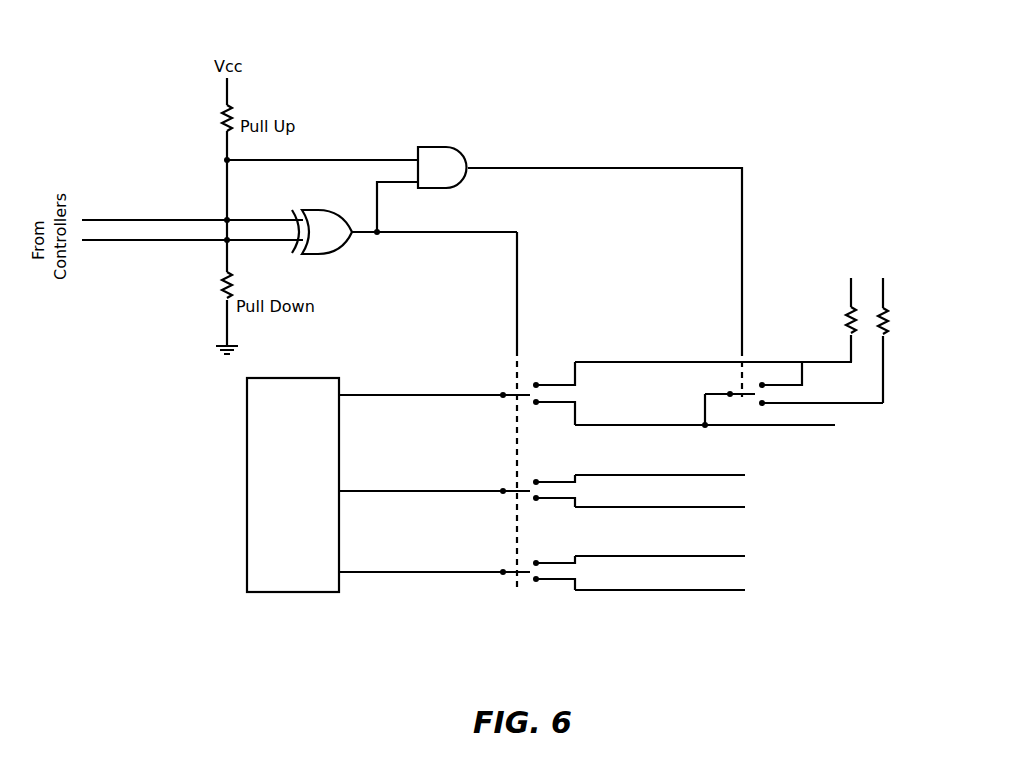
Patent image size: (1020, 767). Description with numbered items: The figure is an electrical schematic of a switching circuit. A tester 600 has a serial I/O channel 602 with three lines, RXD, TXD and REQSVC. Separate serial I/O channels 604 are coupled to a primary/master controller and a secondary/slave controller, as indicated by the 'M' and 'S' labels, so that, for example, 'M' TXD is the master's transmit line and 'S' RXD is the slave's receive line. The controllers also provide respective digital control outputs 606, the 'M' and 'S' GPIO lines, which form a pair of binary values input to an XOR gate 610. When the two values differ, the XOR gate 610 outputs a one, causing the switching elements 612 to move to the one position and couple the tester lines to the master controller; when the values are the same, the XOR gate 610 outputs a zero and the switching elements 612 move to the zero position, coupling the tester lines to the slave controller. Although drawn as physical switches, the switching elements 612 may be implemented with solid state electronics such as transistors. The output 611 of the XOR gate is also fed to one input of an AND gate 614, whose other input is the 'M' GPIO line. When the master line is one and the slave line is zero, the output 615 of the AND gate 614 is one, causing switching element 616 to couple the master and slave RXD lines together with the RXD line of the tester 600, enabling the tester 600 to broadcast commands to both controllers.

The tester 600 is at (298, 593).
The serial I/O channel 602 is at (408, 586).
The serial I/O channels 604 is at (685, 612).
The digital control outputs 606 is at (120, 188).
The XOR gate 610 is at (342, 255).
The output of the XOR gate 611 is at (417, 234).
The switching elements 612 is at (517, 586).
The AND gate 614 is at (431, 145).
The output of the AND gate 615 is at (620, 166).
The switching element 616 is at (736, 396).